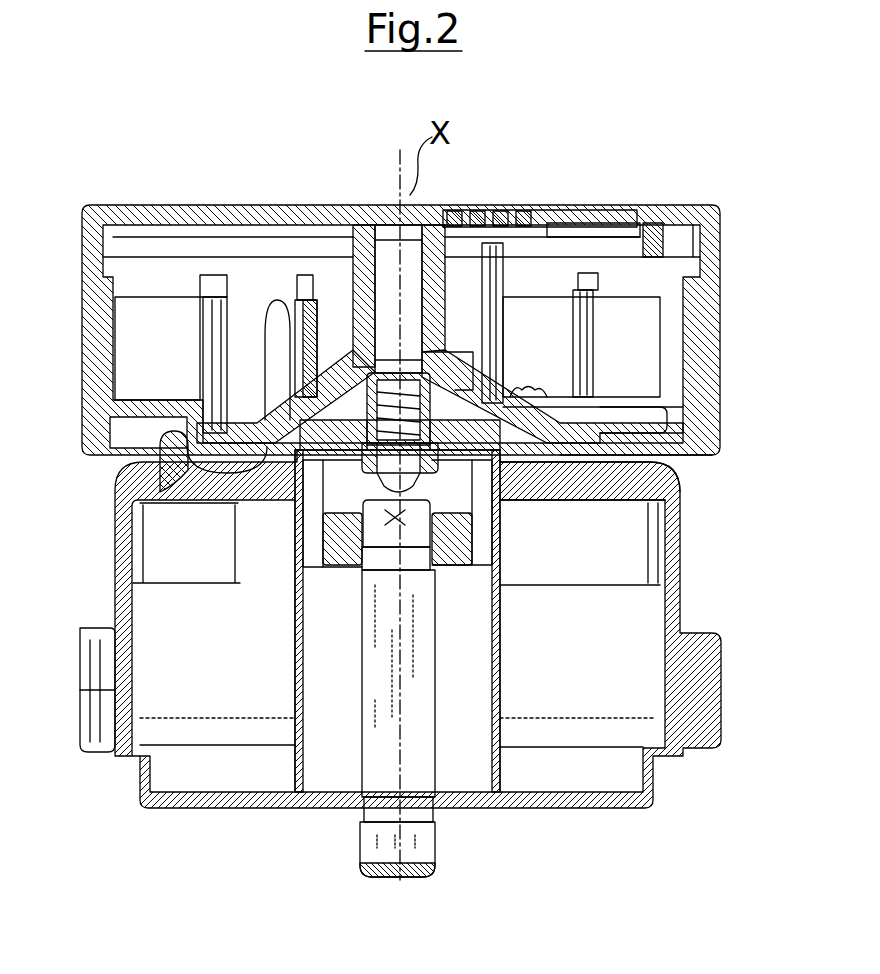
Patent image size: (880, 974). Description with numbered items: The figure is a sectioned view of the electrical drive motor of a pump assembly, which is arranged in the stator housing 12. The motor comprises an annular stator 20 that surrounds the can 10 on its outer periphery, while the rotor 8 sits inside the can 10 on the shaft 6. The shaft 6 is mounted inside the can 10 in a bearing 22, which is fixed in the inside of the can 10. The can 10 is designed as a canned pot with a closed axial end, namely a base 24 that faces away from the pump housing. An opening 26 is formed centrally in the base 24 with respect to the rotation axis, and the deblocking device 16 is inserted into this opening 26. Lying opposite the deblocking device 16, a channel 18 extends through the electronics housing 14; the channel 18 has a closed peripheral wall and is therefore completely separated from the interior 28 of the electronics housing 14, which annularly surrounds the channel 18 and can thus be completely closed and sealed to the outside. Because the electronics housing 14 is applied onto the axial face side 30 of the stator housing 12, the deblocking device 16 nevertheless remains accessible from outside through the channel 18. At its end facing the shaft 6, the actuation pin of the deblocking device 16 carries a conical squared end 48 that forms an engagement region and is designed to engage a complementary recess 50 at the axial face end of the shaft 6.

The shaft 6 is at (420, 835).
The rotor 8 is at (477, 720).
The can 10 is at (595, 587).
The stator housing 12 is at (665, 575).
The electronics housing 14 is at (697, 384).
The deblocking device 16 is at (455, 414).
The channel 18 is at (413, 253).
The annular stator 20 is at (150, 640).
The bearing 22 is at (323, 548).
The base 24 is at (318, 436).
The opening 26 is at (343, 463).
The interior of the electronics housing 28 is at (330, 268).
The axial face side 30 is at (560, 455).
The conical squared end 48 is at (600, 467).
The recess 50 is at (403, 507).